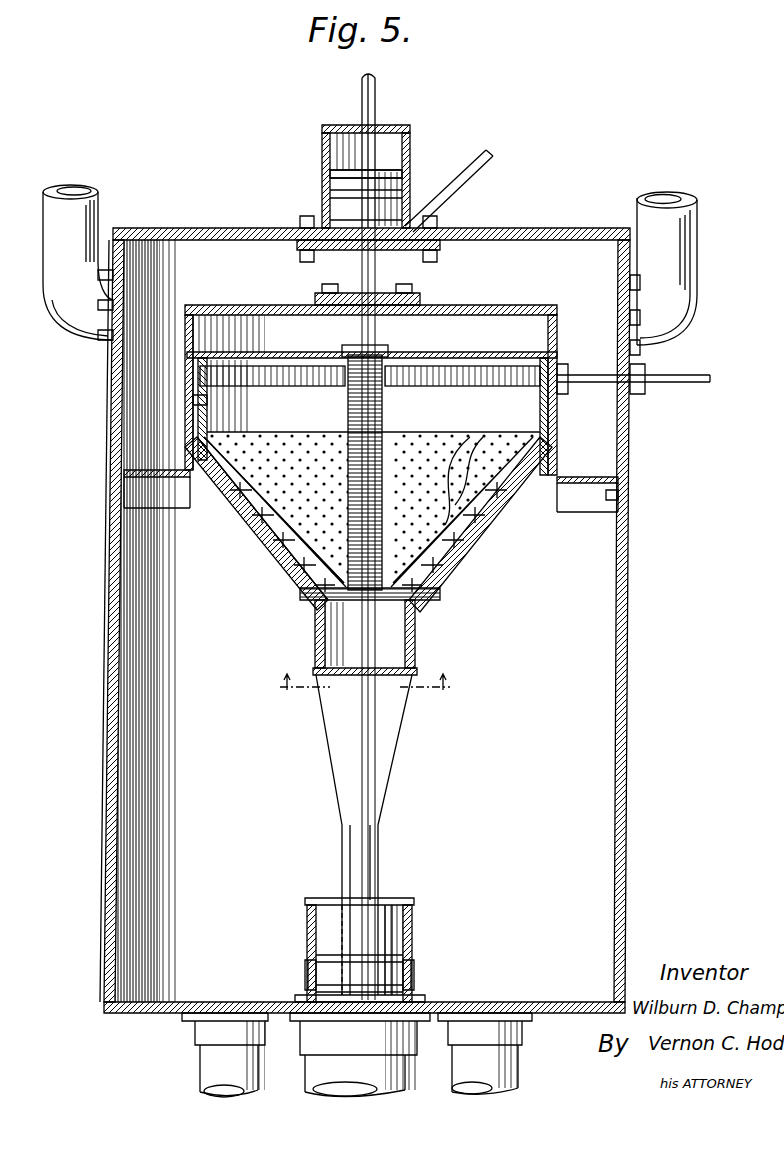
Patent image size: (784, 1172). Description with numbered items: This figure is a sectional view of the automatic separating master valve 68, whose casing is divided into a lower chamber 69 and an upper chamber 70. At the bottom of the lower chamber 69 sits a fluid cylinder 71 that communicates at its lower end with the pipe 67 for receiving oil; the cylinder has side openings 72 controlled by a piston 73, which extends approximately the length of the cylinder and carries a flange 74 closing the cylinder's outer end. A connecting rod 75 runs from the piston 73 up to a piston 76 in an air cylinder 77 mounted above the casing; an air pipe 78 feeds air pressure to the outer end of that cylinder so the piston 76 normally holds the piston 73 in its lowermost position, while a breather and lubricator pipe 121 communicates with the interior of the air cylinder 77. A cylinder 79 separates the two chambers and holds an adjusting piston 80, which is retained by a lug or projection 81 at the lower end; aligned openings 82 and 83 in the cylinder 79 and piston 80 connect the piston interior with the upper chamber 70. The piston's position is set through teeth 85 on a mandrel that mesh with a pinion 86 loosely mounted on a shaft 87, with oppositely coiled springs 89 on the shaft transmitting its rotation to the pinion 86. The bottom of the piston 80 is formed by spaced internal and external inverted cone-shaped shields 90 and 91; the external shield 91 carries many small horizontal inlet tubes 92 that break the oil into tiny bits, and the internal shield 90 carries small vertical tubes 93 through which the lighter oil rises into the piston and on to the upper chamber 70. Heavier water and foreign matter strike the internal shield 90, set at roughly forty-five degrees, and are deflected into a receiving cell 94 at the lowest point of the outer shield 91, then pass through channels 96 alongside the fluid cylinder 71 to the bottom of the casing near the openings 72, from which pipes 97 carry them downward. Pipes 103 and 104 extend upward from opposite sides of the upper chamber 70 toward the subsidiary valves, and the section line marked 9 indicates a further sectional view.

The pipe 67 is at (322, 1072).
The master valve 68 is at (648, 620).
The lower chamber 69 is at (110, 620).
The upper chamber 70 is at (186, 420).
The fluid cylinder 71 is at (414, 926).
The openings 72 is at (305, 975).
The piston 73 is at (395, 905).
The flange 74 is at (320, 898).
The connecting rod 75 is at (366, 750).
The piston 76 is at (412, 163).
The air cylinder 77 is at (385, 125).
The air pipe 78 is at (360, 87).
The cylinder 79 is at (558, 312).
The adjusting piston 80 is at (505, 318).
The lug or projection 81 is at (545, 482).
The openings 82 is at (196, 440).
The openings 83 is at (185, 358).
The teeth 85 is at (348, 444).
The pinion 86 is at (348, 410).
The shaft 87 is at (455, 318).
The springs 89 is at (290, 386).
The internal shield 90 is at (228, 508).
The external shield 91 is at (248, 528).
The inlet tubes 92 is at (290, 565).
The tubes 93 is at (467, 469).
The receiving cell 94 is at (410, 622).
The channels 96 is at (326, 750).
The pipes 97 is at (210, 1064).
The pipe 103 is at (95, 205).
The pipe 104 is at (672, 248).
The breather and lubricator pipe 121 is at (447, 170).
The section line 9- 9 is at (366, 685).